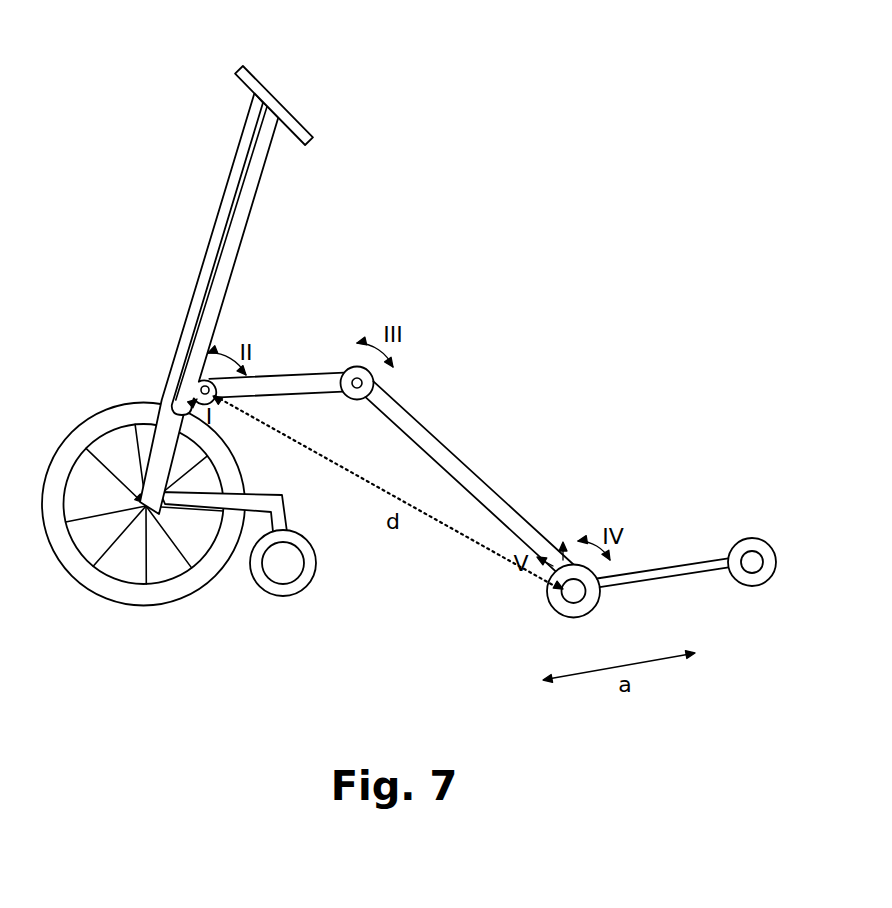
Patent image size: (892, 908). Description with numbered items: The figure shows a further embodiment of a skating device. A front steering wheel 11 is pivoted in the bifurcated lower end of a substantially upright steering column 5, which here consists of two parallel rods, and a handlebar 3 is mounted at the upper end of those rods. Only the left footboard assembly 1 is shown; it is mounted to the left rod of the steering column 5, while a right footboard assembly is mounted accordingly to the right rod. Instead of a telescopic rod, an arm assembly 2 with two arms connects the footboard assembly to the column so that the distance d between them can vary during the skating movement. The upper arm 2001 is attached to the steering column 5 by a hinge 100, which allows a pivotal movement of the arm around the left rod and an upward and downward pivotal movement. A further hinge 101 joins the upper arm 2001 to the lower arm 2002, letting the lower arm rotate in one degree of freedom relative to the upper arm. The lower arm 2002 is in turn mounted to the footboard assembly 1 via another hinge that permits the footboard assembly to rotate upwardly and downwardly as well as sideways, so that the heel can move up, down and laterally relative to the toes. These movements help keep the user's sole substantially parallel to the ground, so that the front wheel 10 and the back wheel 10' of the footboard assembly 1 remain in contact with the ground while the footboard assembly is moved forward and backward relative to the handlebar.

The footboard assembly 1 is at (653, 577).
The arm assembly 2 is at (391, 443).
The handlebar 3 is at (287, 115).
The steering column 5 is at (243, 212).
The front wheel 10 is at (601, 606).
The back wheel 10' is at (778, 576).
The front steering wheel 11 is at (200, 578).
The hinge 100 is at (198, 390).
The further hinge 101 is at (350, 390).
The upper arm 2001 is at (280, 380).
The lower arm 2002 is at (497, 497).